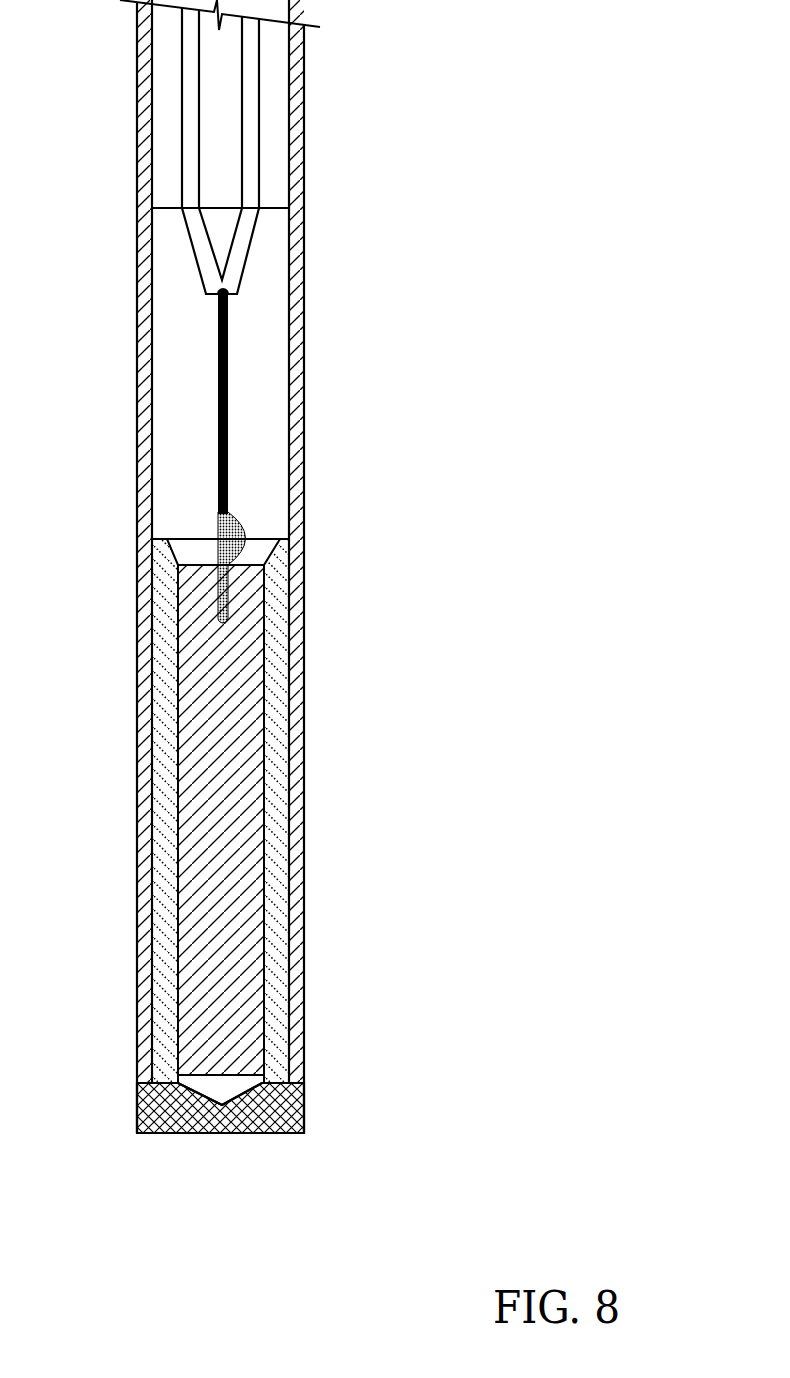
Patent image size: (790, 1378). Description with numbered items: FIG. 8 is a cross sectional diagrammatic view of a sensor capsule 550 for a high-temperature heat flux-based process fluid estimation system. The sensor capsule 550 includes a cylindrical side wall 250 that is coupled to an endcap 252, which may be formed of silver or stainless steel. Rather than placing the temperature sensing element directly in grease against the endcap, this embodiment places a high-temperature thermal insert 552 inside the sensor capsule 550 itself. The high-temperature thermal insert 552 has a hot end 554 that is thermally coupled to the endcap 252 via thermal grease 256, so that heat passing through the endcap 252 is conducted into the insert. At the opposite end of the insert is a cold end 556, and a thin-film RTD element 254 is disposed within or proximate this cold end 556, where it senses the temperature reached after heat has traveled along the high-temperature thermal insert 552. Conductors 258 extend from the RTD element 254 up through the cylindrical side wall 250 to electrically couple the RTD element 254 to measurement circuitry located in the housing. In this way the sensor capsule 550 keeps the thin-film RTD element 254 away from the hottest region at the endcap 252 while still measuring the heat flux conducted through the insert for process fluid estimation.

The cylindrical side wall 250 is at (300, 483).
The endcap 252 is at (262, 1123).
The thin-film RTD element 254 is at (230, 587).
The thermal grease 256 is at (213, 1085).
The conductors 258 is at (242, 137).
The sensor capsule 550 is at (593, 180).
The high-temperature thermal insert 552 is at (235, 917).
The hot end 554 is at (232, 1075).
The cold end 556 is at (200, 564).